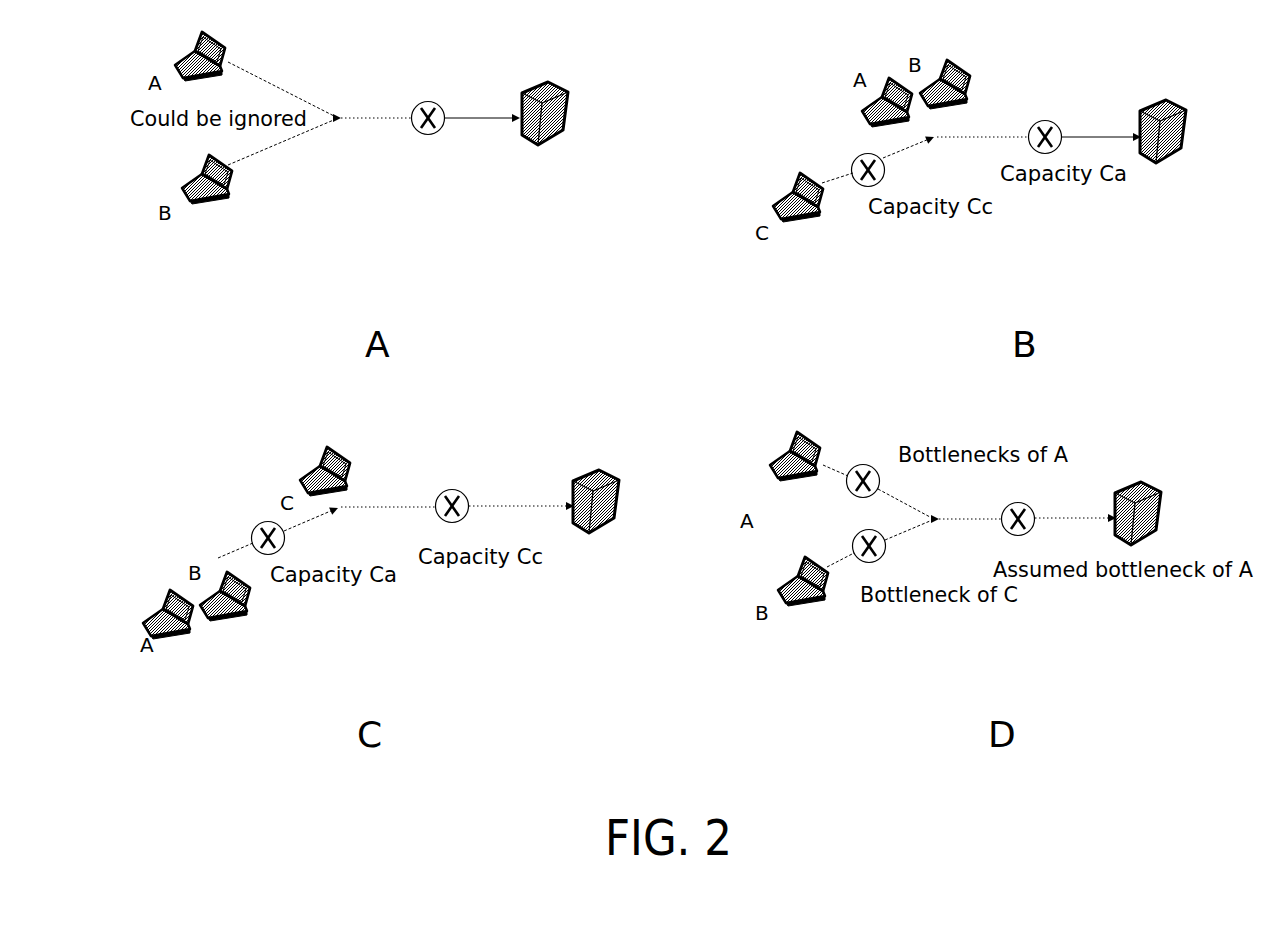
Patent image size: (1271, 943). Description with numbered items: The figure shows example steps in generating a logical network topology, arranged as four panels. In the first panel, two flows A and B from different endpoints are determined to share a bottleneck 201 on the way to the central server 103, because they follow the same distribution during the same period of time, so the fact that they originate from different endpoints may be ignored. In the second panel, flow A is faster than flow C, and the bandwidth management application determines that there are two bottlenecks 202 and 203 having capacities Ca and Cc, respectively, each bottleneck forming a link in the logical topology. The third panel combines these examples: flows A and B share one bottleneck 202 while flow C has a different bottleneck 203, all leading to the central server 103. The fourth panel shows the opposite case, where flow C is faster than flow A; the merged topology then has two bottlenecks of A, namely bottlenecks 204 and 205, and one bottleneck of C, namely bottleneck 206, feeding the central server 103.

The central server 103 is at (563, 87).
The bottleneck 201 is at (434, 100).
The bottleneck 202 is at (1049, 120).
The bottleneck 203 is at (872, 154).
The bottleneck of A 204 is at (865, 464).
The bottleneck of A 205 is at (1019, 504).
The bottleneck of C 206 is at (866, 531).